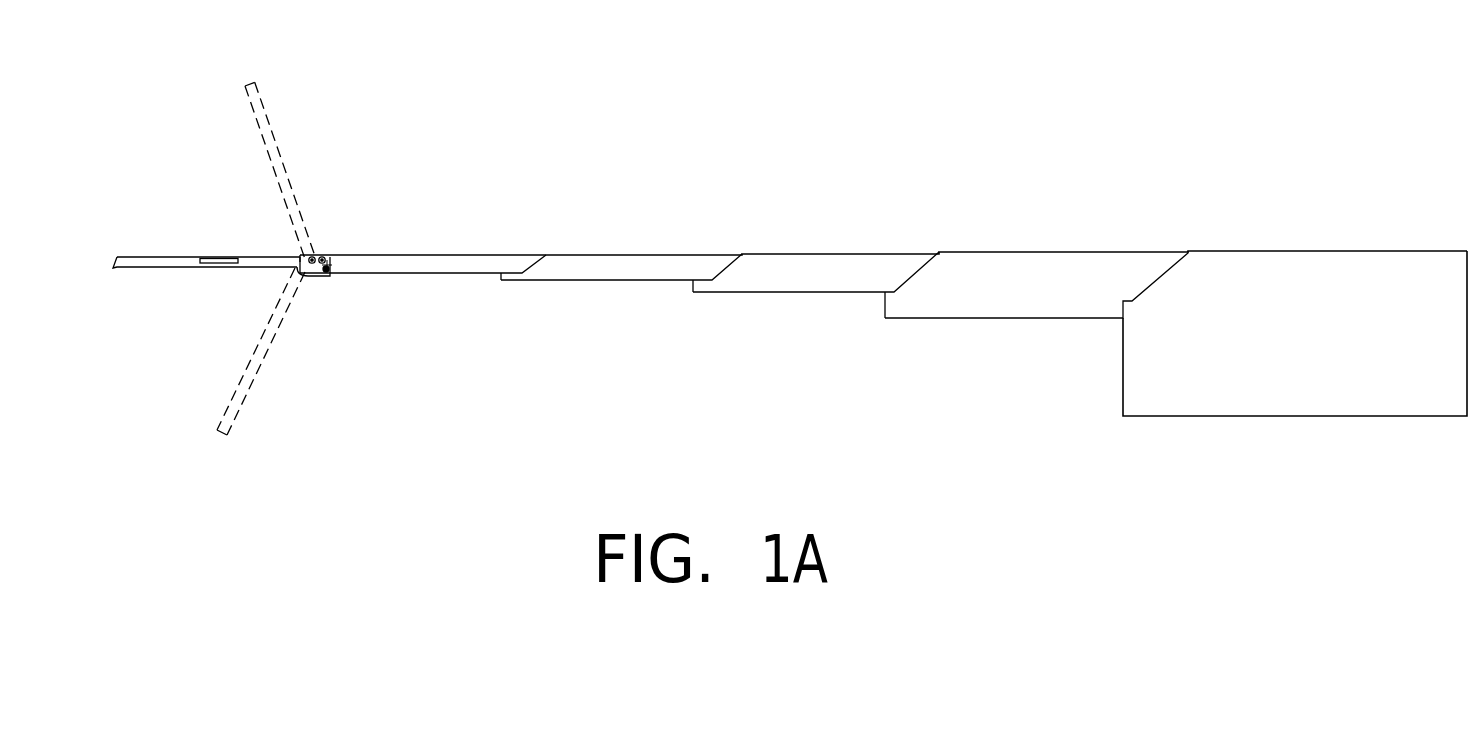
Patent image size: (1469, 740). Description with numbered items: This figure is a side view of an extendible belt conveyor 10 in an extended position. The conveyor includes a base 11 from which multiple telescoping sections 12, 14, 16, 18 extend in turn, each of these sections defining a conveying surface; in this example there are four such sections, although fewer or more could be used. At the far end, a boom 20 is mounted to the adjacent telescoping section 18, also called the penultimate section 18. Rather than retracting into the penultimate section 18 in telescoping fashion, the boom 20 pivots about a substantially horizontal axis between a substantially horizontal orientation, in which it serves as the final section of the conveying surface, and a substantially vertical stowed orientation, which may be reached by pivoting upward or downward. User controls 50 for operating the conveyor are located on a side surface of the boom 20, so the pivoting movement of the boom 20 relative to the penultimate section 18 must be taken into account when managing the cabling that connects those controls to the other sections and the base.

The extendible belt conveyor 10 is at (1020, 132).
The base 11 is at (1318, 251).
The telescoping section 12 is at (1063, 252).
The telescoping section 14 is at (856, 254).
The telescoping section 16 is at (650, 255).
The penultimate section 18 is at (471, 255).
The boom 20 is at (158, 256).
The user controls 50 is at (218, 264).